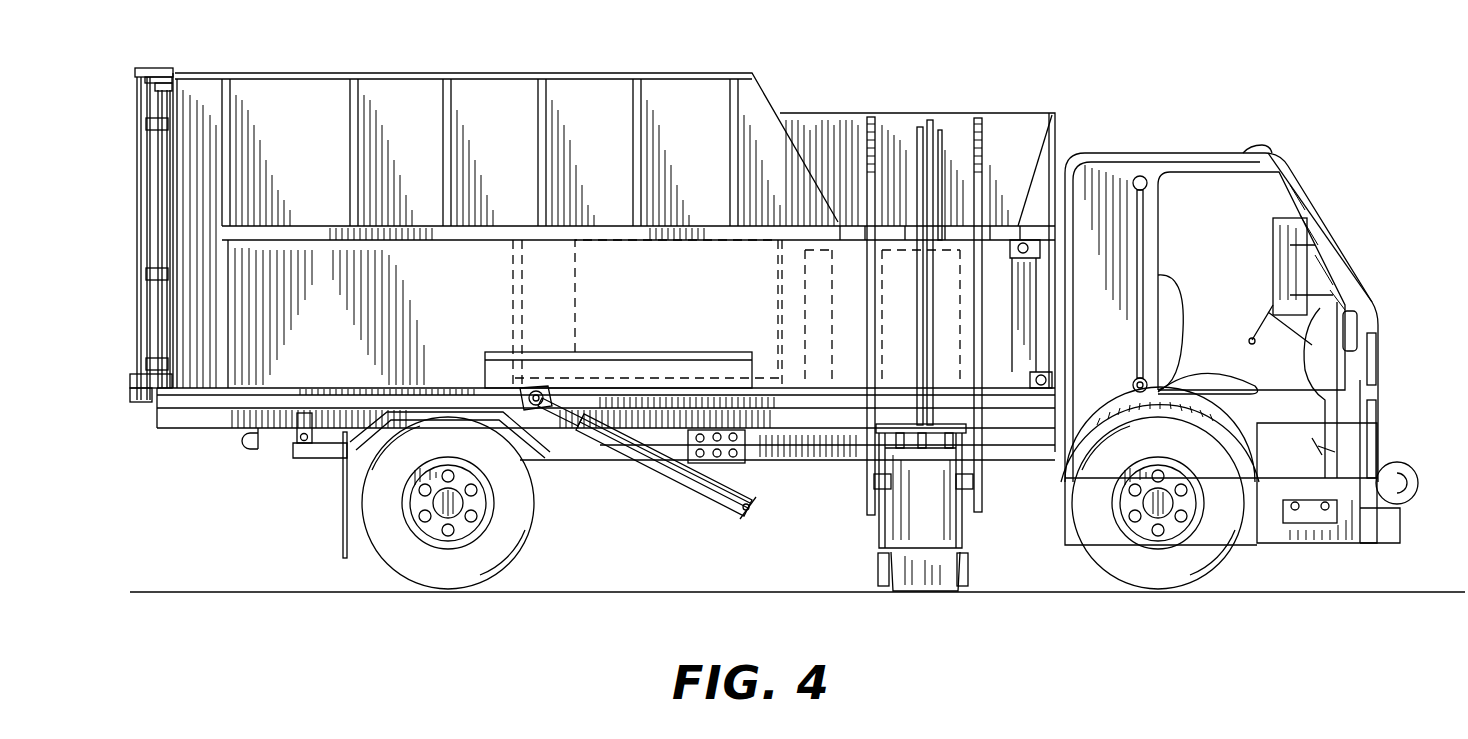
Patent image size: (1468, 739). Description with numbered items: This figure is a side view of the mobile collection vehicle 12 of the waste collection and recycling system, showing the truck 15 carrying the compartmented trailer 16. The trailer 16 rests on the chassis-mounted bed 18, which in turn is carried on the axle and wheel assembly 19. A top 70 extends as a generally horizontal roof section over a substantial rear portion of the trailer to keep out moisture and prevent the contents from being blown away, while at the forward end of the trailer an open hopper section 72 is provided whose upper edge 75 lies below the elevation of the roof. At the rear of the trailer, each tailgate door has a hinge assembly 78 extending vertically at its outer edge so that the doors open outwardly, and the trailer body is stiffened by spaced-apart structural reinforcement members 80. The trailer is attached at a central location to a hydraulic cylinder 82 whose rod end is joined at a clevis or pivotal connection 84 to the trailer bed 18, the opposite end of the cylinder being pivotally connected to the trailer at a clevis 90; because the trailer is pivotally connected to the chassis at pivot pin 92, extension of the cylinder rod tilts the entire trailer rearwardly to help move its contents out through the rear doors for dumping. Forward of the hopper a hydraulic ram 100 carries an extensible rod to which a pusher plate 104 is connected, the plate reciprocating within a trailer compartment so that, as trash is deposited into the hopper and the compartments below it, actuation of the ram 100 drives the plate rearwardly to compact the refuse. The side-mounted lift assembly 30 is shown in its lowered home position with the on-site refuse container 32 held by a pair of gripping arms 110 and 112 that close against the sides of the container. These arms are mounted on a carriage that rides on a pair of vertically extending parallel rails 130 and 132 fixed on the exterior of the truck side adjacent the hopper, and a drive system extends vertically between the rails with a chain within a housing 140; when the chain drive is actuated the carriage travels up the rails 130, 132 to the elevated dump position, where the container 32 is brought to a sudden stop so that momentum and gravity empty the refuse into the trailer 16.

The mobile collection vehicle 12 is at (864, 46).
The truck 15 is at (1365, 322).
The trailer 16 is at (614, 212).
The chassis-mounted bed 18 is at (186, 410).
The axle and wheel assembly 19 is at (488, 522).
The lift assembly 30 is at (913, 507).
The refuse container 32 is at (965, 526).
The top 70 is at (623, 73).
The hopper section 72 is at (917, 263).
The upper edge 75 is at (1004, 130).
The hinge assembly 78 is at (148, 296).
The structural reinforcement members 80 is at (355, 122).
The hydraulic cylinder 82 is at (653, 470).
The clevis or pivotal connection 84 is at (518, 385).
The clevis 90 is at (742, 508).
The pivot pin 92 is at (298, 430).
The hydraulic ram 100 is at (775, 356).
The pusher plate 104 is at (467, 312).
The gripping arm 110 is at (972, 478).
The gripping arm 112 is at (872, 478).
The rail 130 is at (868, 170).
The rail 132 is at (982, 162).
The housing 140 is at (940, 188).